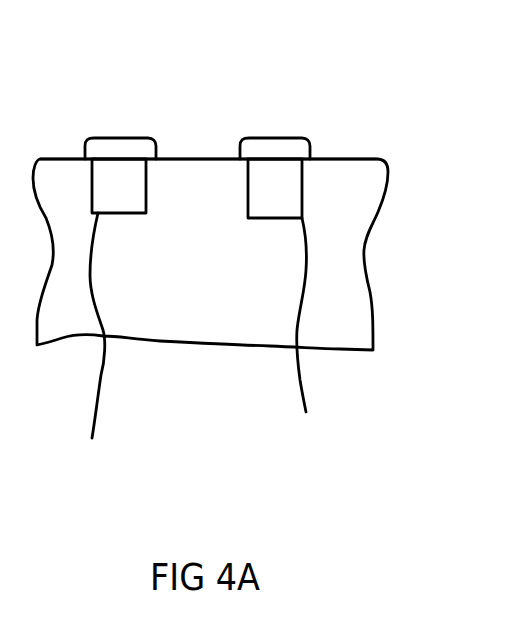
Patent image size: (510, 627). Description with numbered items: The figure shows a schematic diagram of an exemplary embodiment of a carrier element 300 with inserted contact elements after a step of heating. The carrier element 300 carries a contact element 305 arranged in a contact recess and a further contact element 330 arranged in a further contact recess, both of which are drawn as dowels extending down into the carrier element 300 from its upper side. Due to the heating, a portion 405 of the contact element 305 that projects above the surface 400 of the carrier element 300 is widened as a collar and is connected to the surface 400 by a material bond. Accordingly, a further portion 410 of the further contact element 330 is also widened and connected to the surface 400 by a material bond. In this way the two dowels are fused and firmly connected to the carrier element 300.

The carrier element 300 is at (237, 296).
The contact element 305 is at (285, 334).
The further contact element 330 is at (88, 344).
The surface 400 is at (203, 159).
The portion 405 is at (278, 148).
The further portion 410 is at (130, 144).